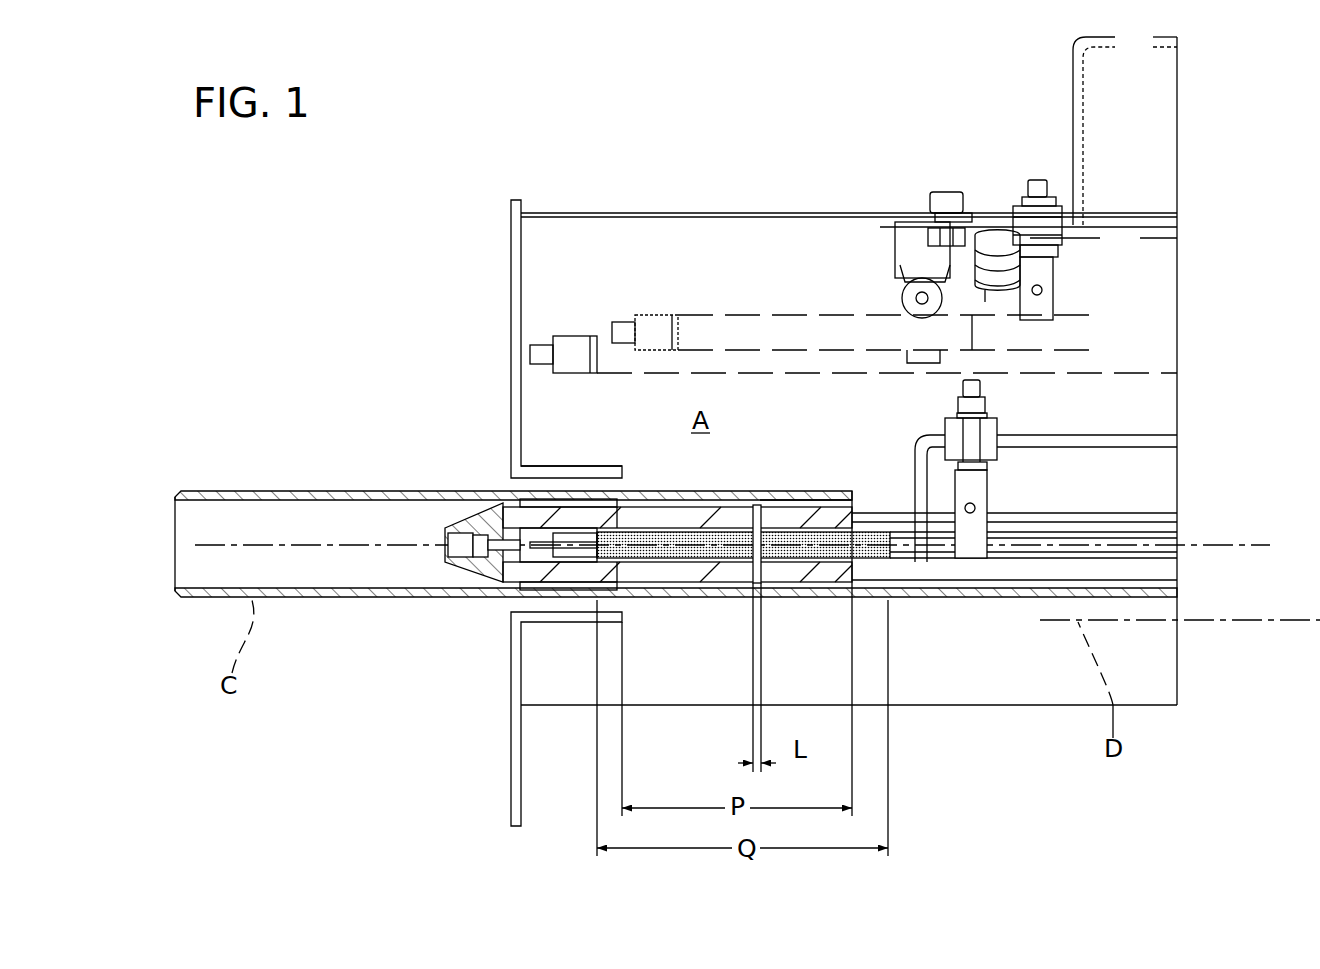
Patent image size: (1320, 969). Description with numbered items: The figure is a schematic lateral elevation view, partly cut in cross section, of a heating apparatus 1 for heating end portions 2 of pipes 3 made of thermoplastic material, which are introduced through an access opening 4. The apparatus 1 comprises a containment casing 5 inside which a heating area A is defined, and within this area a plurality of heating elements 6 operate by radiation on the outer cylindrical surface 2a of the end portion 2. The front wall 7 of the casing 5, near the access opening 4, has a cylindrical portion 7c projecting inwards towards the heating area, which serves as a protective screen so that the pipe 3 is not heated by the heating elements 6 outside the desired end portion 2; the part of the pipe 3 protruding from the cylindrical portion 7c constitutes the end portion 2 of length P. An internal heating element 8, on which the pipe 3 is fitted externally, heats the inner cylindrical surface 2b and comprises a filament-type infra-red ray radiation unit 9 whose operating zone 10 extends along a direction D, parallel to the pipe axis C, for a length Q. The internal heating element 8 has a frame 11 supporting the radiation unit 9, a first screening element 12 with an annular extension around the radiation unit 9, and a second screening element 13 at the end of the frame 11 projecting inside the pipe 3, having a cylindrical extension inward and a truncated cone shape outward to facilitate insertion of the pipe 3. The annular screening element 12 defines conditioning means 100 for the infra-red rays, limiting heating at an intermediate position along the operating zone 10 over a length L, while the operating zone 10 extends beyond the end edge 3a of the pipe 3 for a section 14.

The heating apparatus 1 is at (478, 298).
The end portion 2 is at (802, 489).
The outer cylindrical surface 2a is at (840, 489).
The inner cylindrical surface 2b is at (798, 502).
The pipe 3 is at (251, 489).
The end edge 3a is at (861, 599).
The access opening 4 is at (498, 486).
The containment casing 5 is at (558, 208).
The heating elements 6 is at (596, 330).
The wall 7 is at (508, 257).
The cylindrical portion 7c is at (563, 468).
The internal heating element 8 is at (673, 584).
The infra-red ray radiation unit 9 is at (565, 561).
The operating zone 10 is at (791, 563).
The frame 11 is at (934, 509).
The first screening element 12 is at (757, 504).
The second screening element 13 is at (469, 521).
The section 14 is at (874, 563).
The conditioning means 100 is at (735, 609).